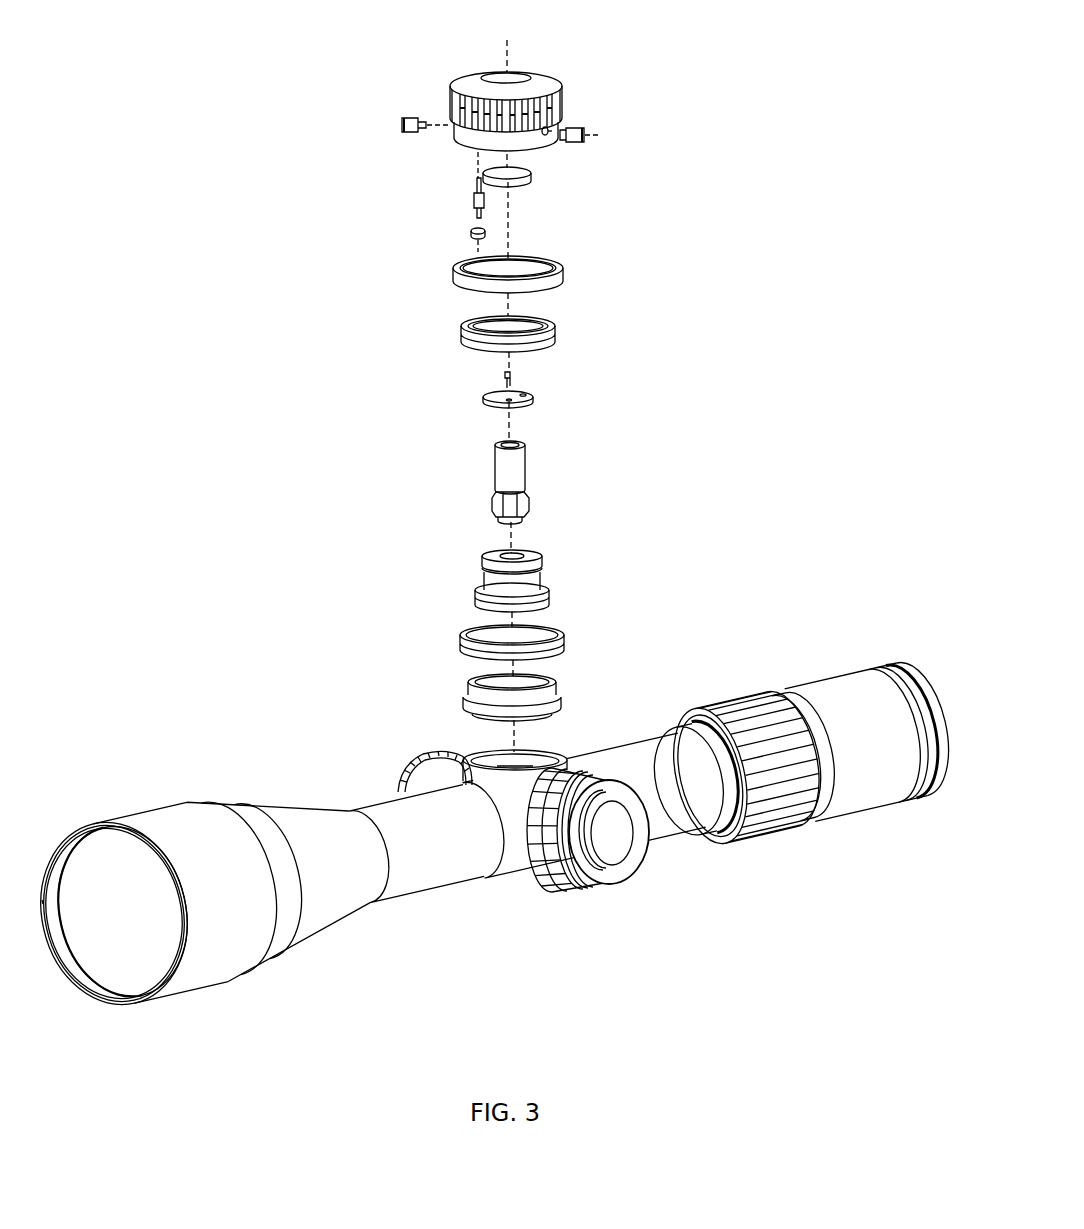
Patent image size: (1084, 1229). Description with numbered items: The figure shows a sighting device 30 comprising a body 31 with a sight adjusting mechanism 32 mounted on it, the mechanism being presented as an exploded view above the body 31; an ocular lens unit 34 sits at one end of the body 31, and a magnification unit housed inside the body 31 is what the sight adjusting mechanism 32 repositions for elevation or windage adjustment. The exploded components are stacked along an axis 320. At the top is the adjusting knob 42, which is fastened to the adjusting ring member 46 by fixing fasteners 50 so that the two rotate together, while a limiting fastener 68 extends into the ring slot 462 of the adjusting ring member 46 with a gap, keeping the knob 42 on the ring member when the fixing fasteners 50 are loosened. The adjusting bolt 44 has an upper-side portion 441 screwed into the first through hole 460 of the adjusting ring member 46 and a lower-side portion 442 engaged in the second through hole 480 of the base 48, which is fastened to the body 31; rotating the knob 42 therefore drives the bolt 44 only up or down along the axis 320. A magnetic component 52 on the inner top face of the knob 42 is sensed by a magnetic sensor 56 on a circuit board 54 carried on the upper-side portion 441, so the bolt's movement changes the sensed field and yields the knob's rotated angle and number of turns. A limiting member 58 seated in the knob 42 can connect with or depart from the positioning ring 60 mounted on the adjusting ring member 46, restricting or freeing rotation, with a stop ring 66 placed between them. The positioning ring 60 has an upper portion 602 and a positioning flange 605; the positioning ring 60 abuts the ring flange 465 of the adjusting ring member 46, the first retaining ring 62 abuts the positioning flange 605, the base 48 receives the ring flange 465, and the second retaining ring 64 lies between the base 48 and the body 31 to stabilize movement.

The sighting device 30 is at (138, 765).
The body 31 is at (395, 815).
The sight adjusting mechanism 32 is at (725, 232).
The ocular lens unit 34 is at (863, 797).
The axis 320 is at (510, 46).
The adjusting knob 42 is at (452, 85).
The adjusting bolt 44 is at (523, 487).
The upper-side portion 441 is at (497, 468).
The lower-side portion 442 is at (497, 505).
The adjusting ring member 46 is at (478, 588).
The first through hole 460 is at (528, 553).
The ring slot 462 is at (540, 575).
The ring flange 465 is at (548, 592).
The base 48 is at (463, 700).
The second through hole 480 is at (545, 683).
The fixing fastener 50 is at (595, 128).
The magnetic component 52 is at (531, 180).
The circuit board 54 is at (487, 396).
The magnetic sensor 56 is at (525, 398).
The limiting member 58 is at (470, 192).
The positioning ring 60 is at (458, 340).
The top portion of locking ring 602 is at (465, 320).
The positioning flange 605 is at (552, 343).
The first retaining ring 62 is at (565, 275).
The second retaining ring 64 is at (560, 640).
The stop ring 66 is at (470, 233).
The limiting fastener 68 is at (400, 122).